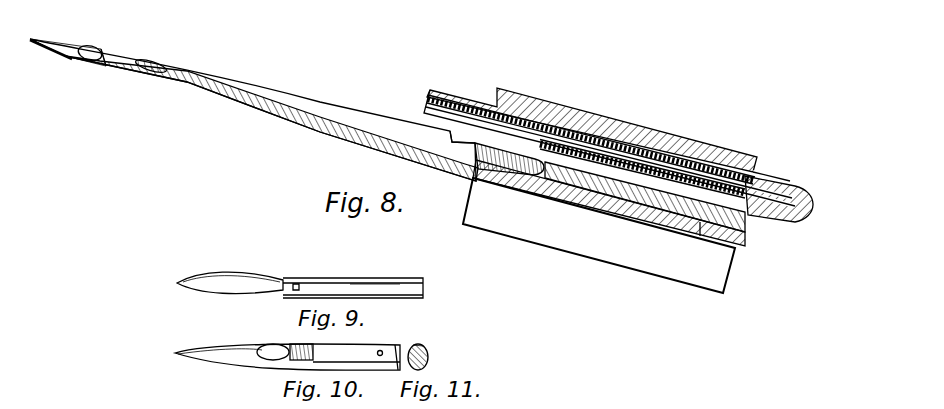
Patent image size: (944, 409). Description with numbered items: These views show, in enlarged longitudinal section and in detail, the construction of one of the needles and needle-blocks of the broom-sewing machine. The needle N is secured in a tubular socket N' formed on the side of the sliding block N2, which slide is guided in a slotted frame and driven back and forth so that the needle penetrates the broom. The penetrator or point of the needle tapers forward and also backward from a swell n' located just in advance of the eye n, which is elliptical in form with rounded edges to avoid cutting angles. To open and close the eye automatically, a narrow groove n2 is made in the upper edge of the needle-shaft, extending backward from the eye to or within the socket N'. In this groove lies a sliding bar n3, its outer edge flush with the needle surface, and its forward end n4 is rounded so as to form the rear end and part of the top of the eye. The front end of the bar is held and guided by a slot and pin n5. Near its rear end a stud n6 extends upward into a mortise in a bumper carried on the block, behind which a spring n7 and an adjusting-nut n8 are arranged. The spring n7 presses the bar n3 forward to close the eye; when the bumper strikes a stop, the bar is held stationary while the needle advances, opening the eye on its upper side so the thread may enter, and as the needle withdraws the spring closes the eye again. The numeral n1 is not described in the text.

In FIG. 8, the needle N is at (253, 110).
In FIG. 9, the needle N is at (353, 293).
In FIG. 10, the needle N is at (287, 357).
In FIG. 8, the tubular socket N' is at (592, 142).
In FIG. 8, the sliding block N2 is at (599, 235).
In FIG. 8, the eye n is at (90, 53).
In FIG. 10, the eye n is at (285, 352).
In FIG. 8, the swell n' is at (68, 52).
In FIG. 9, the swell n' is at (230, 282).
In FIG. 10, the swell n' is at (220, 353).
In FIG. 8, the needle shank n1 is at (509, 159).
In FIG. 11, the groove n2 is at (428, 357).
In FIG. 8, the sliding bar n3 is at (271, 118).
In FIG. 9, the sliding bar n3 is at (375, 289).
In FIG. 11, the sliding bar n3 is at (423, 347).
In FIG. 8, the forward end of sliding bar n4 is at (109, 56).
In FIG. 9, the forward end of sliding bar n4 is at (299, 289).
In FIG. 8, the slot and pin n5 is at (159, 65).
In FIG. 10, the slot and pin n5 is at (382, 351).
In FIG. 8, the stud n6 is at (450, 133).
In FIG. 8, the spring n7 is at (680, 148).
In FIG. 8, the adjusting-nut n8 is at (778, 189).